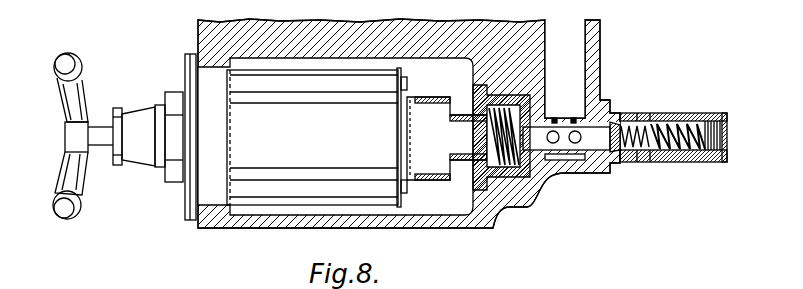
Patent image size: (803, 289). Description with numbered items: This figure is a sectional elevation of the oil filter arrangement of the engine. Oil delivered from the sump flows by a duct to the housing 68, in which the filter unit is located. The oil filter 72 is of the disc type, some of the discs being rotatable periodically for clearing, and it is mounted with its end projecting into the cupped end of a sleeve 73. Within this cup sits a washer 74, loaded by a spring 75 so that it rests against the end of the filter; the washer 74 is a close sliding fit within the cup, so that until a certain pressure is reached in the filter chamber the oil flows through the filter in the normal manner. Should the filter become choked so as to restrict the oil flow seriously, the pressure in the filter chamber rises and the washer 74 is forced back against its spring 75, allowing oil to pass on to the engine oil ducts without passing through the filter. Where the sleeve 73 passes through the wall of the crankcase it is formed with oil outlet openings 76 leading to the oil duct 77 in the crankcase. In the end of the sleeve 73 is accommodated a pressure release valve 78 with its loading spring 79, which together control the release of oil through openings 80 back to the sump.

The housing 68 is at (322, 64).
The oil filter 72 is at (184, 204).
The sleeve 73 is at (471, 86).
The washer 74 is at (462, 131).
The spring 75 is at (518, 107).
The oil outlet openings 76 is at (573, 117).
The oil duct 77 is at (576, 44).
The pressure release valve 78 is at (607, 154).
The loading spring 79 is at (683, 154).
The openings 80 is at (628, 111).